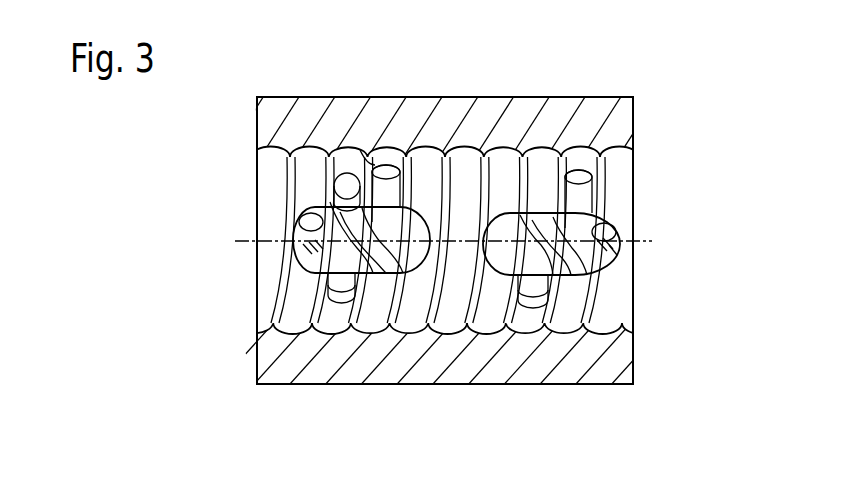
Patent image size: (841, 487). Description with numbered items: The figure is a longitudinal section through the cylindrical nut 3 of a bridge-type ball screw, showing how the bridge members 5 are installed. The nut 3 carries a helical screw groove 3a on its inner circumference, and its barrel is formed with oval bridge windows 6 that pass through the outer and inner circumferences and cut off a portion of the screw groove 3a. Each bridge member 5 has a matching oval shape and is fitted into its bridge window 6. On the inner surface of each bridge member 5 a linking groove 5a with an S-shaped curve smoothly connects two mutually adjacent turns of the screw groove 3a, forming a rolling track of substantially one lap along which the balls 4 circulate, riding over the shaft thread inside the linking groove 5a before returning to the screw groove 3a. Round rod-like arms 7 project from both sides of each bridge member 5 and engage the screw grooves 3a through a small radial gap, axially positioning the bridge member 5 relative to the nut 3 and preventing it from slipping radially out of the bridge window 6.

The nut 3 is at (641, 124).
The screw groove 3a is at (353, 162).
The balls 4 is at (334, 190).
The bridge member 5 is at (306, 249).
The linking groove 5a is at (384, 290).
The bridge window 6 is at (300, 221).
The arms 7 is at (388, 168).